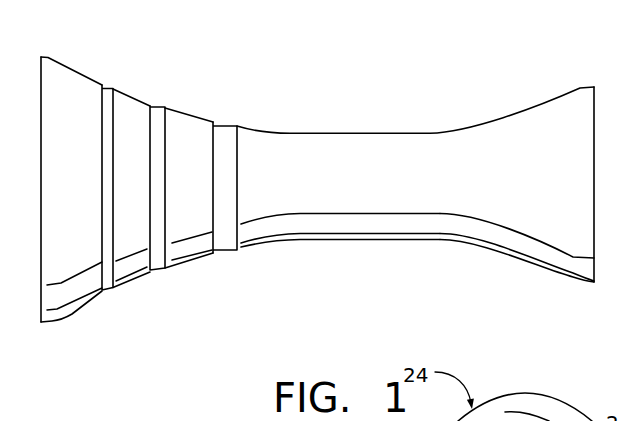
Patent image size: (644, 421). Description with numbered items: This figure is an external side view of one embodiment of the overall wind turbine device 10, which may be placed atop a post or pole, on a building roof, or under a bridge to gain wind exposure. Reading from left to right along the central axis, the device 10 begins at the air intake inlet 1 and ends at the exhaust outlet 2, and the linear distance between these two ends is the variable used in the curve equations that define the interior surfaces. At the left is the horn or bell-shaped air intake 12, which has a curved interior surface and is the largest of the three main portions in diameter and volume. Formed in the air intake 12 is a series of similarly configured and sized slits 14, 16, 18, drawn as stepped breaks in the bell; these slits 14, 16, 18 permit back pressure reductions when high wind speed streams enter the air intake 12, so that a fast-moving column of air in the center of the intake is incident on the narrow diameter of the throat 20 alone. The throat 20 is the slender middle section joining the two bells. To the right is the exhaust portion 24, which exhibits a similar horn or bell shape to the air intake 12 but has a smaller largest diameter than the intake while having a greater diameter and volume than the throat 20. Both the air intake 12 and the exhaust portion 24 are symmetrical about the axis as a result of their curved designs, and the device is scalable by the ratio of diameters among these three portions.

The air intake inlet 1 is at (30, 189).
The exhaust outlet 2 is at (610, 184).
The wind turbine device 10 is at (408, 85).
The air intake 12 is at (263, 258).
The slit 14 is at (110, 83).
The slit 16 is at (150, 106).
The slit 18 is at (227, 123).
The throat 20 is at (415, 248).
The exhaust portion 24 is at (587, 300).